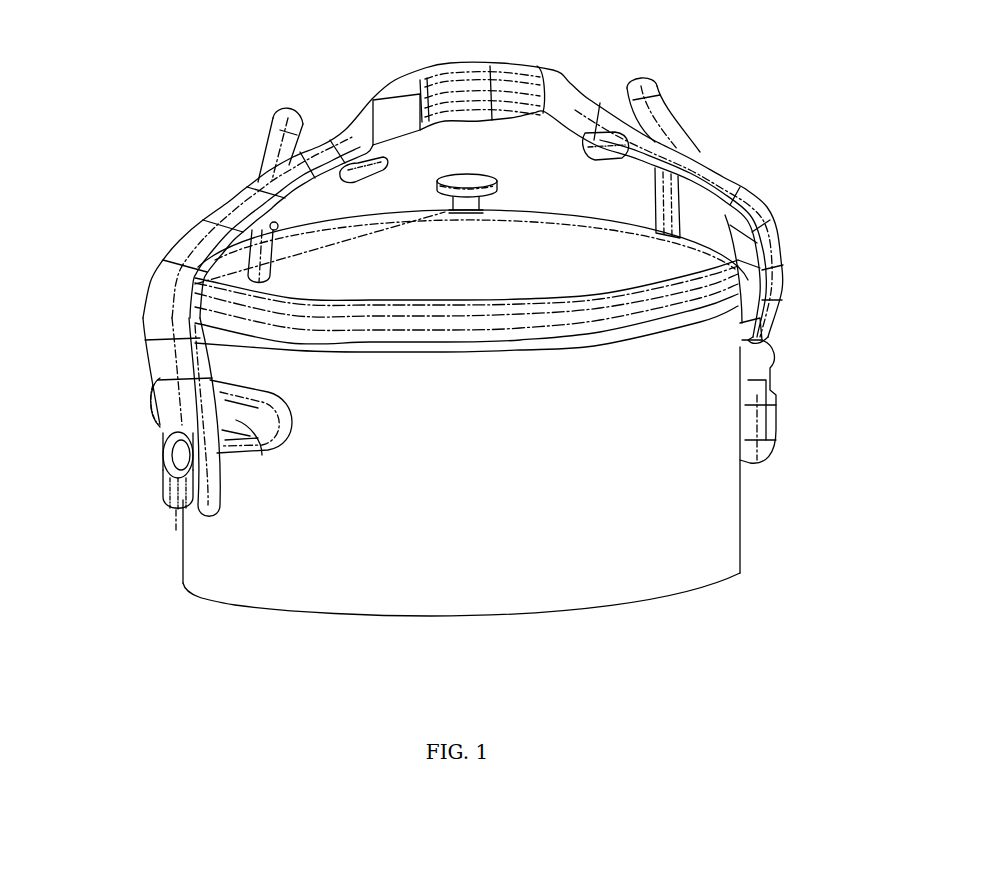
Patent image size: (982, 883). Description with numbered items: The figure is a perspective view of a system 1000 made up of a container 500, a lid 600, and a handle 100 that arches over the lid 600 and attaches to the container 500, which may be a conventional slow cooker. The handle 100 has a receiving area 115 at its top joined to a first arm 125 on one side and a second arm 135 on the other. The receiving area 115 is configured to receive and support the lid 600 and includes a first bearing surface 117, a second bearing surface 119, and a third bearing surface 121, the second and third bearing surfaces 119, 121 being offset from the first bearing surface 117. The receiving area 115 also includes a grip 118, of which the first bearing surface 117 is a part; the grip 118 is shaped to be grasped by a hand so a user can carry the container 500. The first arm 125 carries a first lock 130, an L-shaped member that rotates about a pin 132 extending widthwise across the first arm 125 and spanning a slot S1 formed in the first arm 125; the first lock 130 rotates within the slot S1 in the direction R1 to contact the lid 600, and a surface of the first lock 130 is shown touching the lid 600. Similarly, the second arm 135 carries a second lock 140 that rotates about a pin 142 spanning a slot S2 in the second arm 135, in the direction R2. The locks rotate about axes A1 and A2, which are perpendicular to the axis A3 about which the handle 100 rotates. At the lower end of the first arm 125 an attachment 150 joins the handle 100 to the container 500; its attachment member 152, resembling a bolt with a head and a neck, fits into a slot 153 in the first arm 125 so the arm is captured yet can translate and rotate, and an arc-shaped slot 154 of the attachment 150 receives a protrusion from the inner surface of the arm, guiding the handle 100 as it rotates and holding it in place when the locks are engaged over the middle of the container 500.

The system 1000 is at (198, 72).
The handle 100 is at (588, 62).
The receiving area 115 is at (338, 63).
The grip 118 is at (458, 68).
The first bearing surface 117 is at (482, 128).
The second bearing surface 119 is at (366, 166).
The third bearing surface 121 is at (613, 138).
The first lock 130 is at (273, 150).
The pin 132 is at (276, 223).
The second lock 140 is at (660, 107).
The pin 142 is at (700, 186).
The first arm 125 is at (162, 293).
The second arm 135 is at (760, 207).
The attachment 150 is at (135, 389).
The attachment member 152 is at (177, 447).
The slot 153 is at (187, 498).
The slot 154 is at (238, 428).
The lid 600 is at (680, 266).
The container 500 is at (712, 523).
The direction of rotation R1 is at (317, 118).
The direction of rotation R2 is at (602, 90).
The slot S1 is at (224, 218).
The slot S2 is at (716, 150).
The axis A1 is at (290, 230).
The axis A2 is at (710, 188).
The axis A3 is at (177, 460).